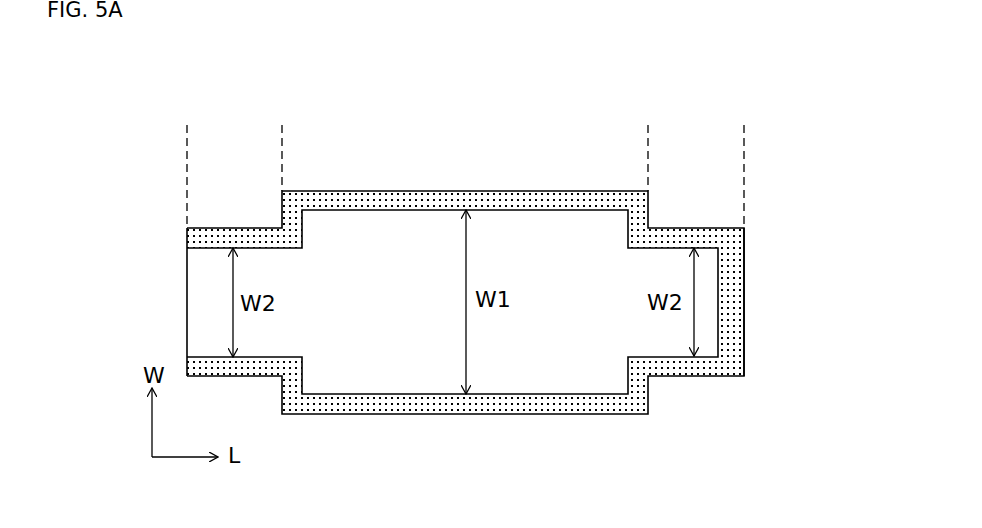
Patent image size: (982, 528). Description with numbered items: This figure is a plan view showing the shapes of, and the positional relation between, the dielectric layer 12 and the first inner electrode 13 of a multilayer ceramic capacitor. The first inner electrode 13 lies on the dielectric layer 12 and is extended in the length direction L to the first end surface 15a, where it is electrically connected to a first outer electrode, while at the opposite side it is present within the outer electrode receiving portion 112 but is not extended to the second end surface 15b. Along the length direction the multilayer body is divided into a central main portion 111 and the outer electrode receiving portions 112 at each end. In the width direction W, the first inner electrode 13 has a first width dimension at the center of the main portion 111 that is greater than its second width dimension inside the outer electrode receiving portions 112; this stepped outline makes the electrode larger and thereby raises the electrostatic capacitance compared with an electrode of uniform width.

The dielectric layer 12 is at (505, 415).
The first inner electrode 13 is at (592, 394).
The first end surface 15a is at (182, 286).
The second end surface 15b is at (750, 264).
The main portion 111 is at (648, 163).
The outer electrode receiving portion 112 is at (282, 163).